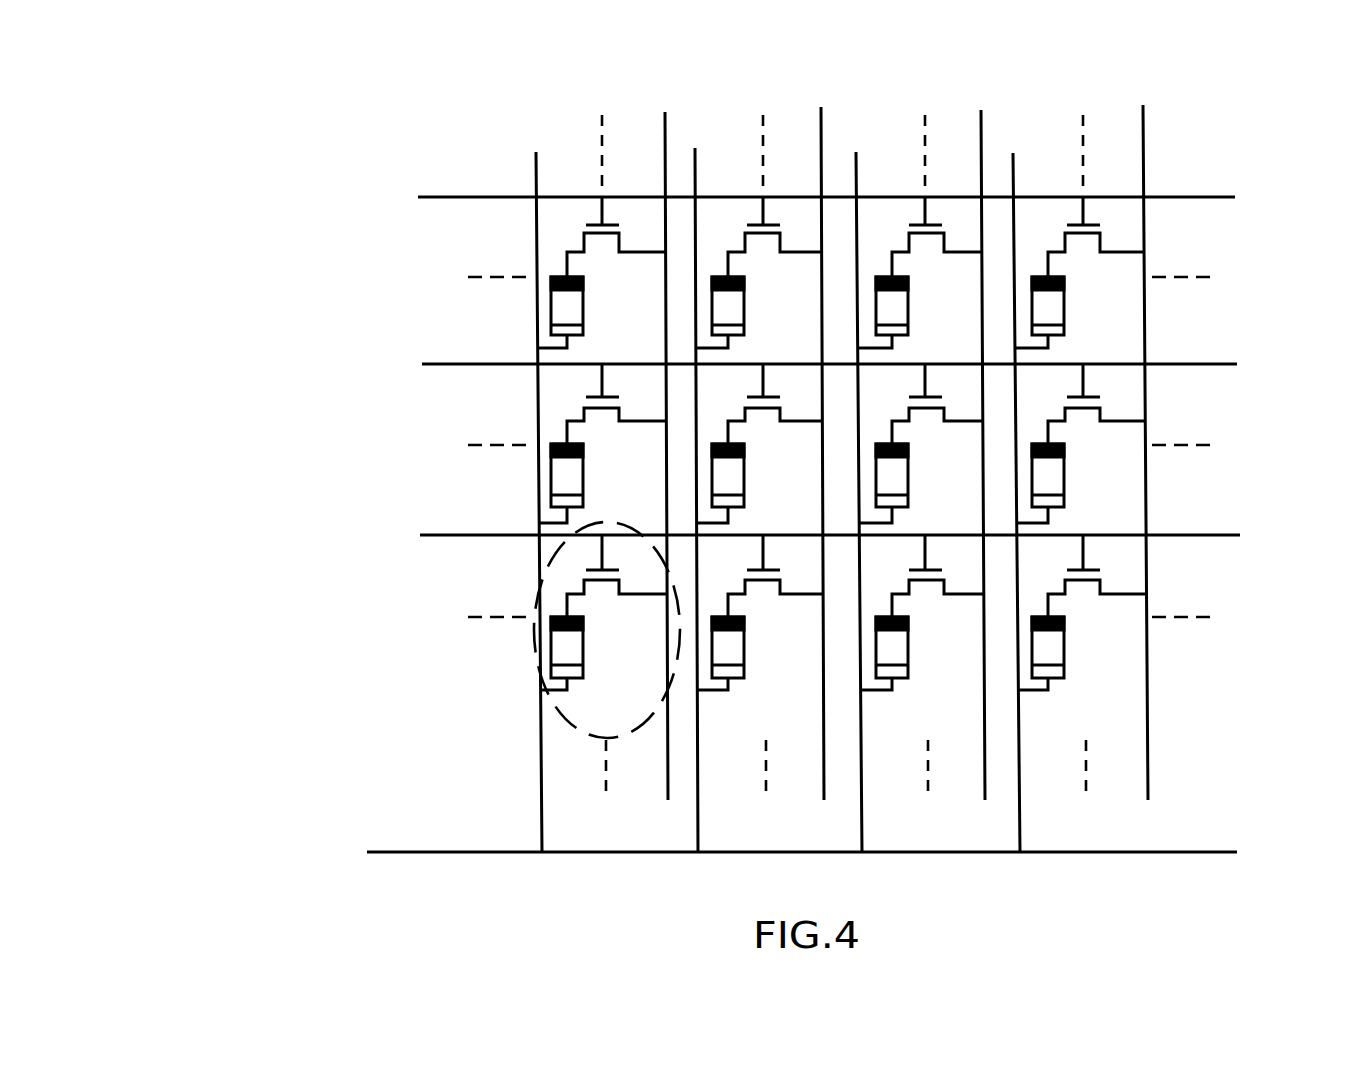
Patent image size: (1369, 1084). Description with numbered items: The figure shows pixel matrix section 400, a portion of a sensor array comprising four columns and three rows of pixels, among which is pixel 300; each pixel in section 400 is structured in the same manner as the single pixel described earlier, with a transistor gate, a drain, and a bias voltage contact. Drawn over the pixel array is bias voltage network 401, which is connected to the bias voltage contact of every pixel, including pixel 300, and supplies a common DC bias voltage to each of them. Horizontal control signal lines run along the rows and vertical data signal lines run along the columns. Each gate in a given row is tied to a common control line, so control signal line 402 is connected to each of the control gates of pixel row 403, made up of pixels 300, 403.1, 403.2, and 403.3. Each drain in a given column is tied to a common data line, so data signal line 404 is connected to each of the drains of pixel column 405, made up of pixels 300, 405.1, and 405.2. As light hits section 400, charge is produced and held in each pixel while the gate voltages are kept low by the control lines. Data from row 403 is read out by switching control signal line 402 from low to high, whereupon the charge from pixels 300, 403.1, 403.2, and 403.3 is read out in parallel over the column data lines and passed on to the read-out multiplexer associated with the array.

The pixel 300 is at (490, 690).
The pixel matrix section 400 is at (827, 535).
The bias voltage network 401 is at (380, 852).
The control signal line 402 is at (416, 548).
The pixel row 403 is at (1015, 636).
The pixel 403.1 is at (760, 612).
The pixel 403.2 is at (922, 612).
The pixel 403.3 is at (1082, 612).
The data signal line 404 is at (662, 132).
The pixel column 405 is at (580, 575).
The pixel 405.1 is at (603, 443).
The pixel 405.2 is at (602, 272).